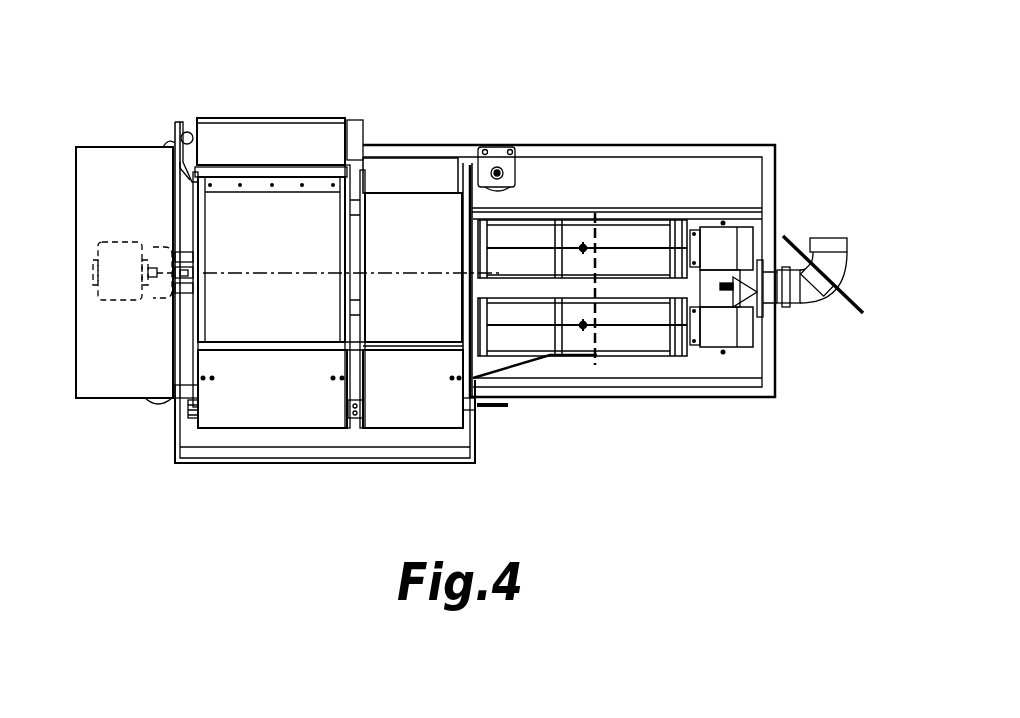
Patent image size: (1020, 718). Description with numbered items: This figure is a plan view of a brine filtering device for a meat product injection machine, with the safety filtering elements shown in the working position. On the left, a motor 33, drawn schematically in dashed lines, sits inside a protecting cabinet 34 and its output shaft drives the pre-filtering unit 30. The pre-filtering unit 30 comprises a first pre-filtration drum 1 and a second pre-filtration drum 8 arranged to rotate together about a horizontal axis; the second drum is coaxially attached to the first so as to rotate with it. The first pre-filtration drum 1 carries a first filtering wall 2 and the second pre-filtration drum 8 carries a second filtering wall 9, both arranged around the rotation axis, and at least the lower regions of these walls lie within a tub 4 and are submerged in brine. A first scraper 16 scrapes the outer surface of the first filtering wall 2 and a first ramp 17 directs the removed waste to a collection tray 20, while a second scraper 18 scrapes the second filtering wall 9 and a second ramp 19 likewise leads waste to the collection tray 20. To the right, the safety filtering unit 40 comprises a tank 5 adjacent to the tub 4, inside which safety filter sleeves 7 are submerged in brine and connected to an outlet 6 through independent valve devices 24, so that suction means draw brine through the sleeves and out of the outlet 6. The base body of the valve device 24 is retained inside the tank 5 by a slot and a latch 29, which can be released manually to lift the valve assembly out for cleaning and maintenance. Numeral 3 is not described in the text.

The first pre-filtration drum 1 is at (247, 214).
The first filtering wall 2 is at (287, 200).
The top cover 3 is at (268, 130).
The tub 4 is at (178, 375).
The tank 5 is at (635, 370).
The outlet 6 is at (830, 238).
The safety filter sleeves 7 is at (585, 342).
The second pre-filtration drum 8 is at (426, 213).
The second filtering wall 9 is at (393, 203).
The first scraper 16 is at (252, 352).
The first ramp 17 is at (285, 420).
The second scraper 18 is at (410, 352).
The second ramp 19 is at (425, 420).
The collection tray 20 is at (337, 445).
The valve devices 24 is at (733, 350).
The latch 29 is at (743, 290).
The pre-filtering unit 30 is at (363, 95).
The motor 33 is at (100, 245).
The protecting cabinet 34 is at (108, 155).
The safety filtering unit 40 is at (622, 122).